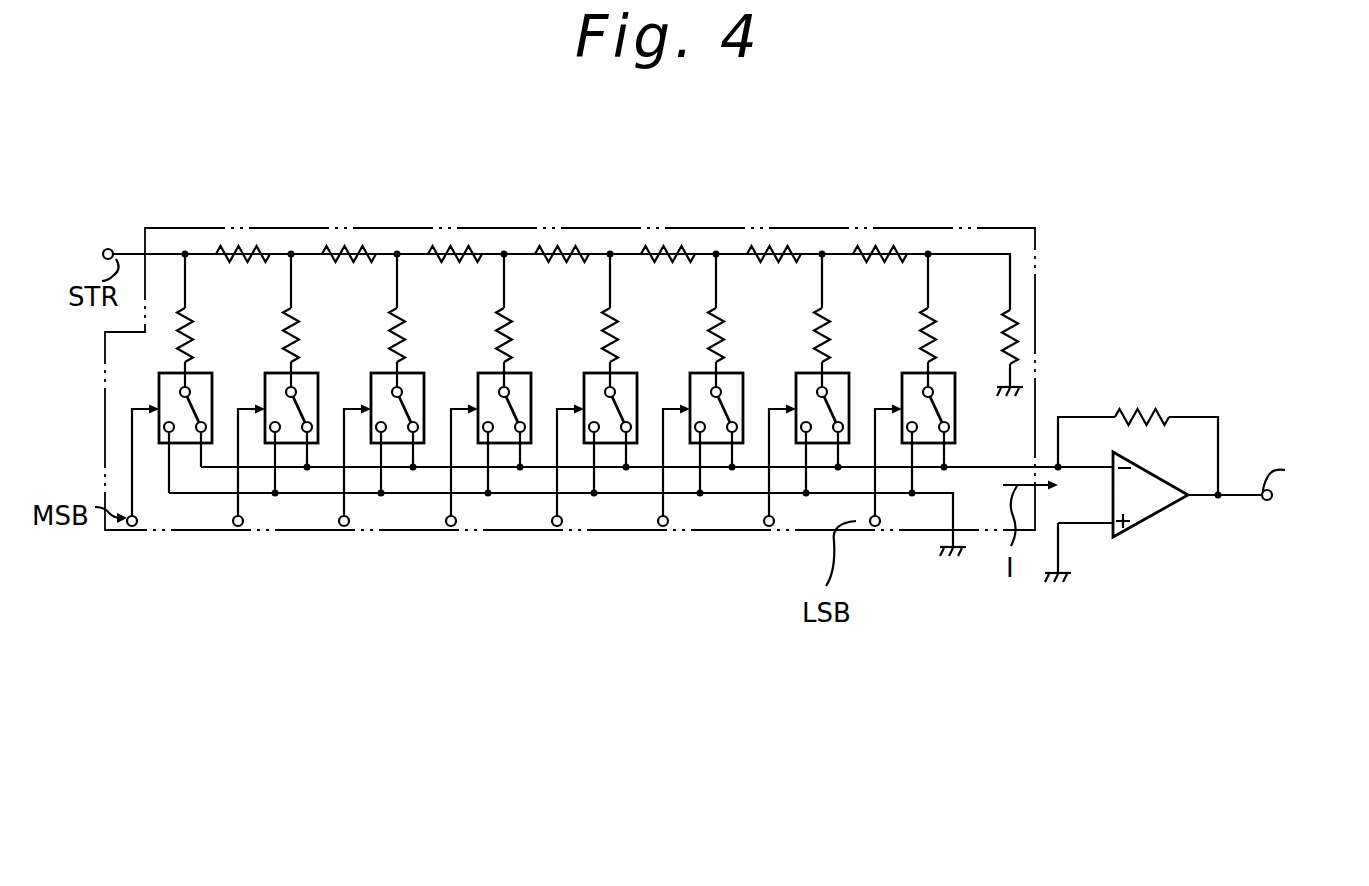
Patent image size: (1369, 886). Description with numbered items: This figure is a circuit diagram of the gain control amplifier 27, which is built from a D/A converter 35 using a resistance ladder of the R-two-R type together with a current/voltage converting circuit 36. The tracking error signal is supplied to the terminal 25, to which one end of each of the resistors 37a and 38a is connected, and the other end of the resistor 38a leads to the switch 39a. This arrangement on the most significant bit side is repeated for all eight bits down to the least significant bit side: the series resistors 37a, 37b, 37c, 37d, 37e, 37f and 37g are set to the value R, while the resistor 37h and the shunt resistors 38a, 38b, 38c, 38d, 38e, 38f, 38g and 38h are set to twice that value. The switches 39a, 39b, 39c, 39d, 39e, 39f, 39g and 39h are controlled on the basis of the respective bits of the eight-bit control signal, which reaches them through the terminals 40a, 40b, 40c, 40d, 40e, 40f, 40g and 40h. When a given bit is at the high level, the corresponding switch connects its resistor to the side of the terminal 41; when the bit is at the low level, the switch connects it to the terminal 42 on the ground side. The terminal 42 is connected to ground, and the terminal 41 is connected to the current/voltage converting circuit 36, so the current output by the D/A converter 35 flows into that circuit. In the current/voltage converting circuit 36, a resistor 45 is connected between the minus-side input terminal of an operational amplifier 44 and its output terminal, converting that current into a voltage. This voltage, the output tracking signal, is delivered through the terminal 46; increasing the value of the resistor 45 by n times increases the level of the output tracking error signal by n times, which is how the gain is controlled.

The terminal 25 is at (107, 248).
The gain control amplifier 27 is at (1064, 311).
The D/A converter 35 is at (1044, 222).
The current/voltage converting circuit 36 is at (1202, 476).
The resistor 37a is at (239, 240).
The resistor 37b is at (345, 240).
The resistor 37c is at (451, 240).
The resistor 37d is at (558, 240).
The resistor 37e is at (664, 240).
The resistor 37f is at (770, 240).
The resistor 37g is at (876, 240).
The resistor 37h is at (1012, 306).
The resistor 38a is at (189, 316).
The resistor 38b is at (295, 316).
The resistor 38c is at (401, 316).
The resistor 38d is at (508, 316).
The resistor 38e is at (614, 316).
The resistor 38f is at (720, 316).
The resistor 38g is at (826, 316).
The resistor 38h is at (932, 316).
The switch 39a is at (212, 376).
The switch 39b is at (318, 376).
The switch 39c is at (424, 376).
The switch 39d is at (531, 376).
The switch 39e is at (637, 376).
The switch 39f is at (743, 376).
The switch 39g is at (849, 376).
The switch 39h is at (955, 376).
The terminal 40a is at (132, 527).
The terminal 40b is at (238, 527).
The terminal 40c is at (344, 527).
The terminal 40d is at (451, 527).
The terminal 40e is at (557, 527).
The terminal 40f is at (663, 527).
The terminal 40g is at (769, 527).
The terminal 40h is at (875, 527).
The terminal 41 is at (953, 422).
The terminal 42 is at (906, 438).
The operational amplifier 44 is at (1162, 512).
The resistor 45 is at (1145, 406).
The terminal 46 is at (1274, 500).